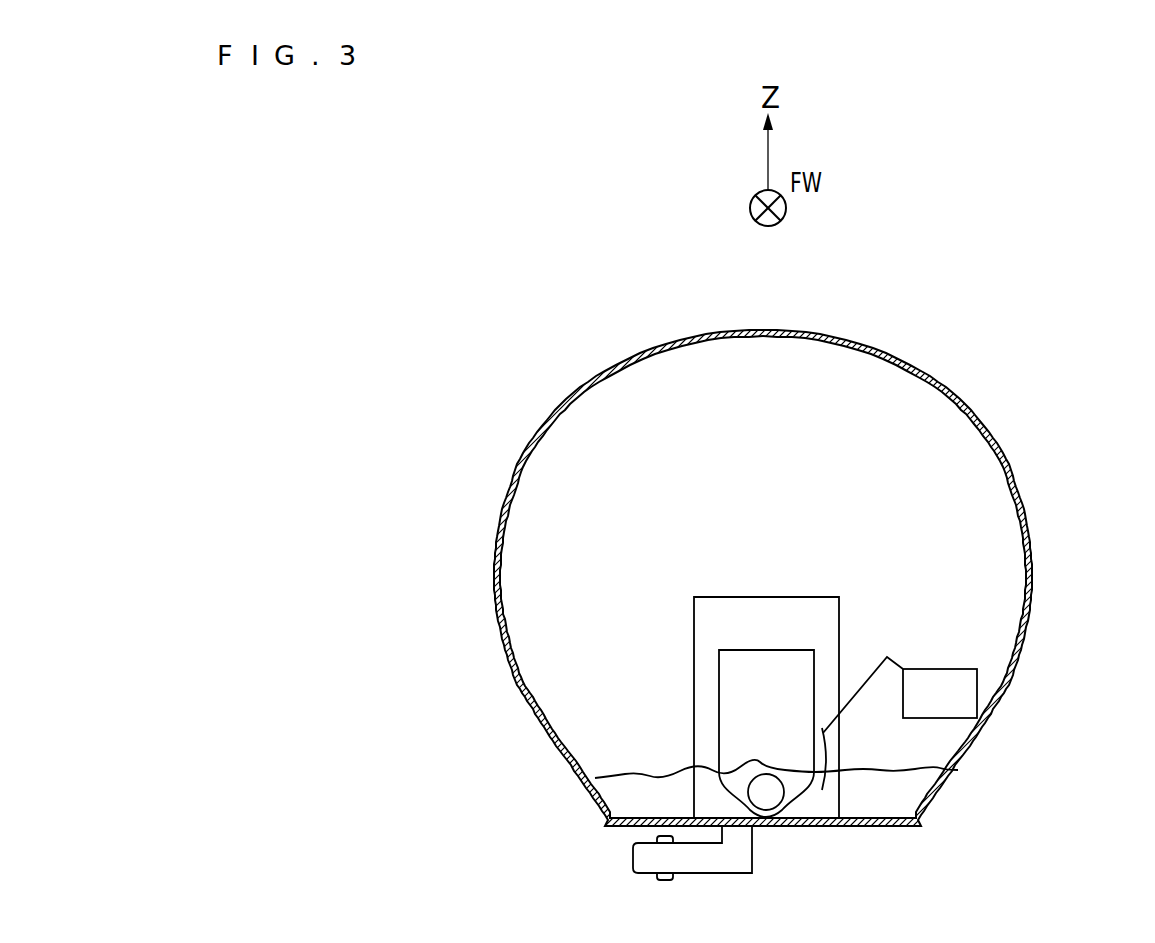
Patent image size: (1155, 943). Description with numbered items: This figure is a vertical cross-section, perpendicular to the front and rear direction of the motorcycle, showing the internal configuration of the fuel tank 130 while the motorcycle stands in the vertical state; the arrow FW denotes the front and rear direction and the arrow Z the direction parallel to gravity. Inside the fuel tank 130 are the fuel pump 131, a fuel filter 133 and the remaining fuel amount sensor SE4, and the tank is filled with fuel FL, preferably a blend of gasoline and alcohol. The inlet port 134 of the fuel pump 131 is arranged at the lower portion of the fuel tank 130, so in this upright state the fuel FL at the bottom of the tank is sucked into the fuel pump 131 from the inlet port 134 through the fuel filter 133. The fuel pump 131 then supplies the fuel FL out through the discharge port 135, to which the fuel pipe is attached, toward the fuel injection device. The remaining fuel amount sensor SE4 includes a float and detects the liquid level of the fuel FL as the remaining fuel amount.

The fuel tank 130 is at (863, 342).
The fuel pump 131 is at (800, 597).
The fuel filter 133 is at (815, 668).
The inlet port 134 is at (768, 797).
The discharge port 135 is at (632, 855).
The remaining fuel amount sensor SE4 is at (952, 669).
The fuel FL is at (628, 790).